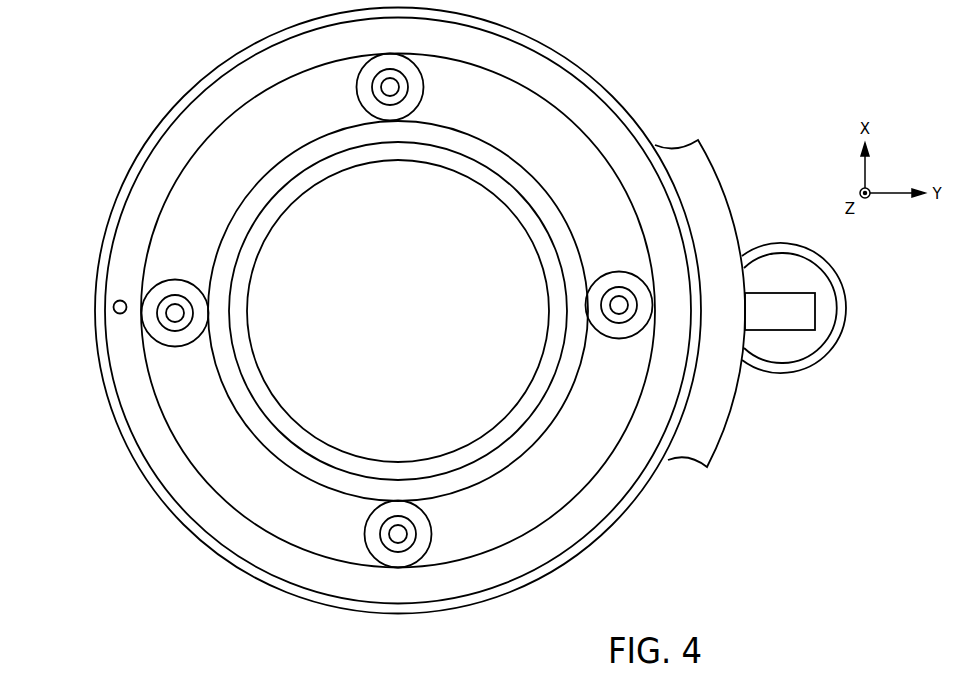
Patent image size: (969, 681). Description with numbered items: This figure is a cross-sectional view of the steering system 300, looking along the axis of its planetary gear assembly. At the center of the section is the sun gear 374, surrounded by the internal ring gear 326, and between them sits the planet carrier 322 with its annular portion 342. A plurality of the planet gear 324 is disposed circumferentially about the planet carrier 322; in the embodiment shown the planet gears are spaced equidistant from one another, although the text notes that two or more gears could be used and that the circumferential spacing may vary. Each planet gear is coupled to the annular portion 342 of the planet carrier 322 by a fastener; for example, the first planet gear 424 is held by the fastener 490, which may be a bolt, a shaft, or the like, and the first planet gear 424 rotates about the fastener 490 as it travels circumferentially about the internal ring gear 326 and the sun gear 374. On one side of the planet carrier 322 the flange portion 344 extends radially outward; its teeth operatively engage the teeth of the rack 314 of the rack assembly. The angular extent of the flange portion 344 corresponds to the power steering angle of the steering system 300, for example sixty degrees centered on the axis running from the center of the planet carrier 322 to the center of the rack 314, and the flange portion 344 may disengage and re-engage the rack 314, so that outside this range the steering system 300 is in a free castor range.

The steering system 300 is at (474, 311).
The rack 314 is at (788, 313).
The planet carrier 322 is at (253, 496).
The planet gear 324 is at (417, 75).
The internal ring gear 326 is at (547, 538).
The annular portion 342 is at (622, 515).
The flange portion 344 is at (707, 432).
The sun gear 374 is at (495, 460).
The first planet gear 424 is at (148, 325).
The fastener 490 is at (168, 313).